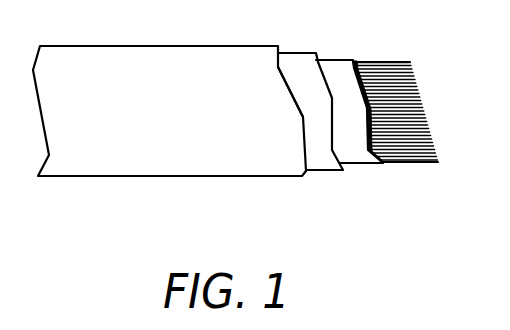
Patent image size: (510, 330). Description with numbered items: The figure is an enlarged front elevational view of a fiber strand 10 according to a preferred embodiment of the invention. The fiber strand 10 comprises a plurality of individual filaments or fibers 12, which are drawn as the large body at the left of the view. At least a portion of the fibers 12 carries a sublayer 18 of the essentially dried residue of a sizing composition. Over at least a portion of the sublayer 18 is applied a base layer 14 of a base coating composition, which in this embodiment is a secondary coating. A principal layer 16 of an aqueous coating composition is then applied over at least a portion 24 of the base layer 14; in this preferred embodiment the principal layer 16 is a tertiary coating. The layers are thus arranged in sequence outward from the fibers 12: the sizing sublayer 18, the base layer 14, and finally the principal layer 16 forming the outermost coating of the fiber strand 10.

The fiber strand 10 is at (142, 176).
The fibers 12 is at (417, 164).
The base layer 14 is at (325, 172).
The principal layer 16 is at (279, 173).
The sublayer 18 is at (367, 167).
The portion of the base layer 24 is at (286, 80).